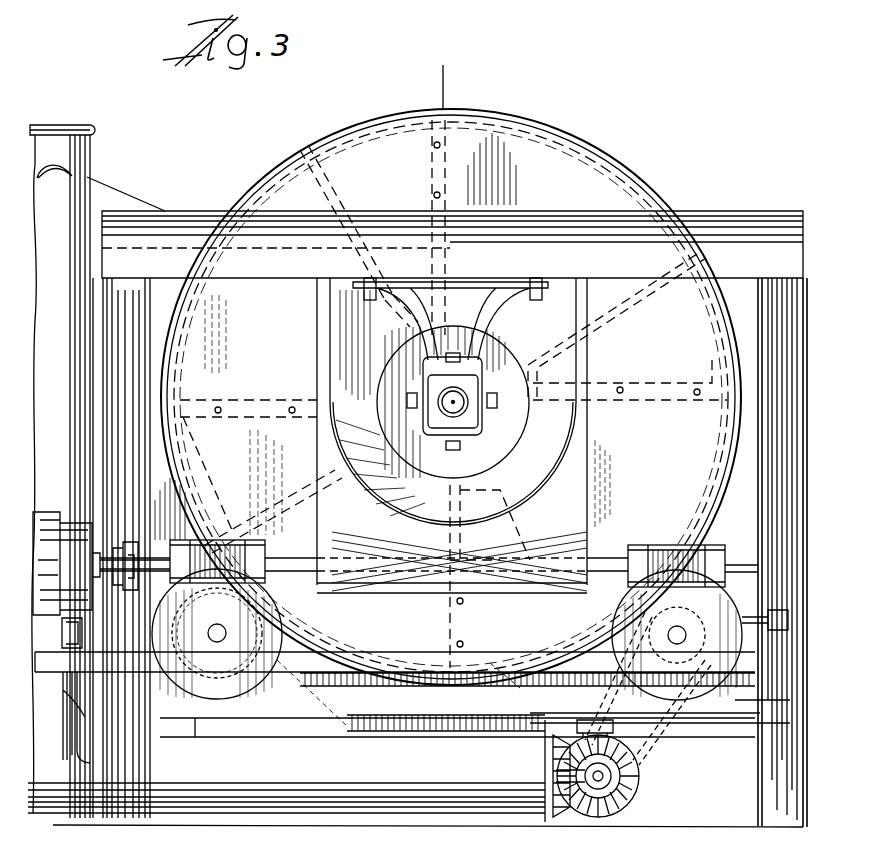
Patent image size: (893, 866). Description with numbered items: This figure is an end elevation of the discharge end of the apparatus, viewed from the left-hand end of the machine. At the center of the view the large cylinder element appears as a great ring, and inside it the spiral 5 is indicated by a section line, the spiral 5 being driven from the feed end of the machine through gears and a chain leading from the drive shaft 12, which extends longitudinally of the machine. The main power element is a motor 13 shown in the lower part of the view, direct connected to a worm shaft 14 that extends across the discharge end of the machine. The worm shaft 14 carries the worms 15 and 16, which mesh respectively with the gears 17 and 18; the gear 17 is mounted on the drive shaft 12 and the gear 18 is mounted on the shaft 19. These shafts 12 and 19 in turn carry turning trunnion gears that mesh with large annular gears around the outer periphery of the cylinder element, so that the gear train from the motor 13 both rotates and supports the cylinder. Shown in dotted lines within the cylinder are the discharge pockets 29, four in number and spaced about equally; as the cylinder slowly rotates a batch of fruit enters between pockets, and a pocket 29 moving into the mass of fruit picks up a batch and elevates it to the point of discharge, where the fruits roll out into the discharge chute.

The spiral 5 is at (415, 99).
The drive shaft 12 is at (217, 624).
The motor 13 is at (43, 512).
The worm shaft 14 is at (279, 566).
The worm 15 is at (245, 572).
The worm 16 is at (665, 545).
The gear 17 is at (243, 632).
The gear 18 is at (648, 611).
The shaft 19 is at (683, 630).
The discharge pockets 29 is at (350, 175).